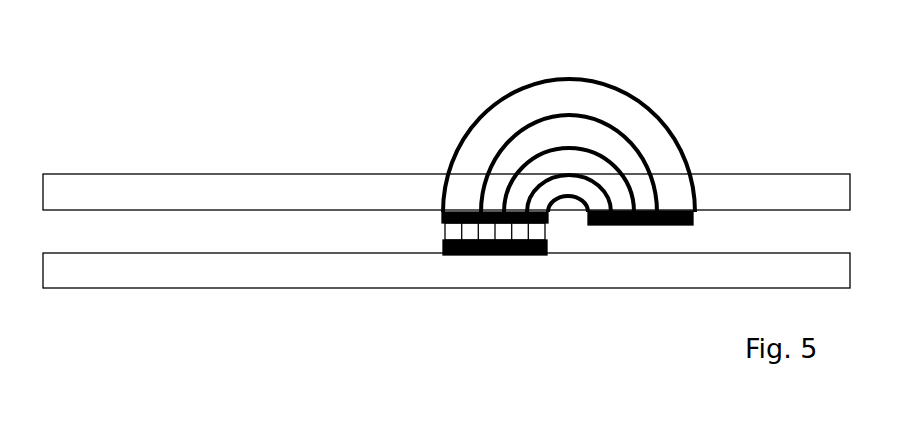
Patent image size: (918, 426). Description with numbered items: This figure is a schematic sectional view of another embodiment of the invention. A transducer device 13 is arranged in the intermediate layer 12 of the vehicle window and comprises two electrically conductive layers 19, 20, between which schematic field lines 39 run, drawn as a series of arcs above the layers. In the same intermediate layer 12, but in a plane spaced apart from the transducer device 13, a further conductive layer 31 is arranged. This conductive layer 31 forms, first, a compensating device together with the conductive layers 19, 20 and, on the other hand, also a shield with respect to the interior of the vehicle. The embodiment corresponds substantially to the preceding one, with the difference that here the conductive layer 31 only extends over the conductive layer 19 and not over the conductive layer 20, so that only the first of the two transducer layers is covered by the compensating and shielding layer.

The intermediate layer 12 is at (697, 231).
The transducer device 13 is at (578, 234).
The conductive layer 19 is at (463, 206).
The conductive layer 20 is at (677, 203).
The conductive layer 31 is at (490, 264).
The field lines 39 is at (480, 105).